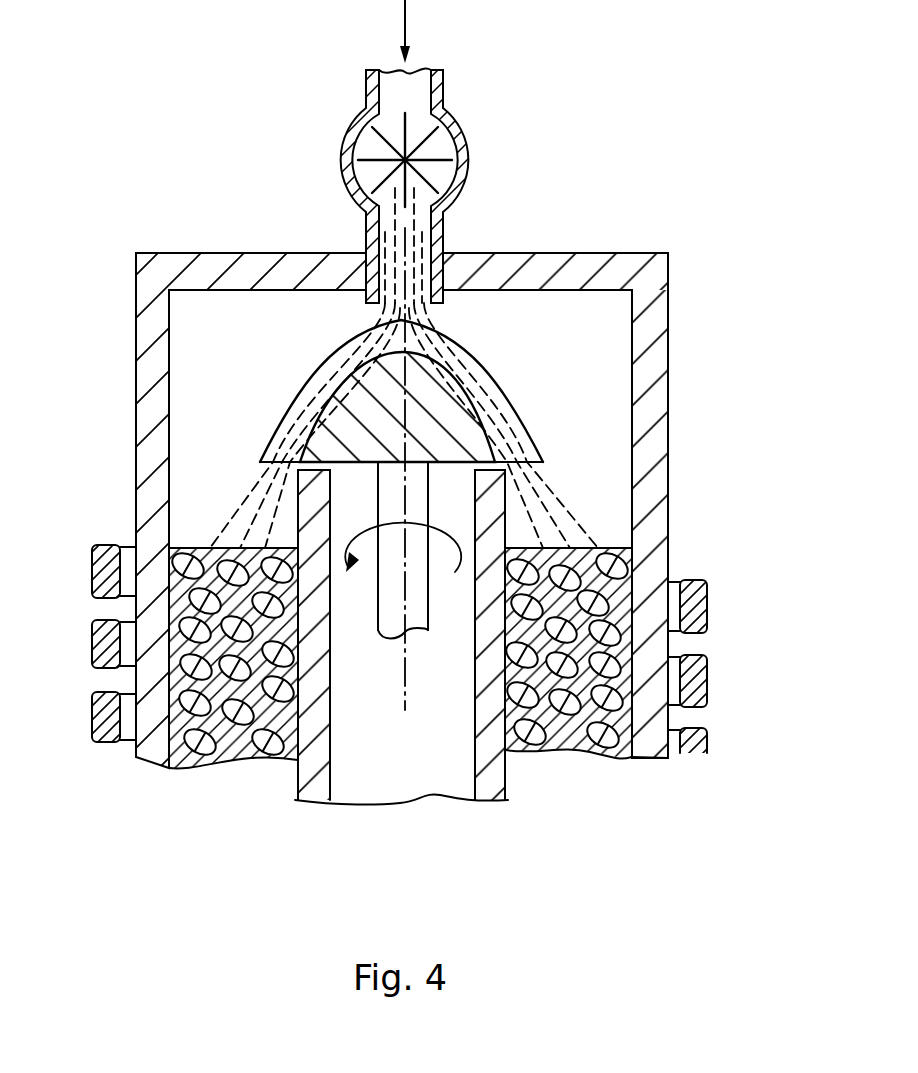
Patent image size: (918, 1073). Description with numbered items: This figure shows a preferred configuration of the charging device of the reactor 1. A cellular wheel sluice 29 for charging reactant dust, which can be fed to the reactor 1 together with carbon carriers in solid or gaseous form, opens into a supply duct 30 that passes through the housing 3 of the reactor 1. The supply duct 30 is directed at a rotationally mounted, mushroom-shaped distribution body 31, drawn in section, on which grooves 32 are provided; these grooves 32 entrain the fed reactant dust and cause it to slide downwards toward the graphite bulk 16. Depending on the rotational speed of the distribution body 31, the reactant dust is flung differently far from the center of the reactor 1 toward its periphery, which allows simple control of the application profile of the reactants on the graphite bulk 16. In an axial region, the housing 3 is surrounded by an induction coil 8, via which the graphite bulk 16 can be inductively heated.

The reactor 1 is at (413, 429).
The housing 3 is at (645, 459).
The induction coil 8 is at (703, 683).
The graphite bulk 16 is at (563, 732).
The cellular wheel sluice 29 is at (440, 150).
The supply duct 30 is at (437, 243).
The distribution body 31 is at (438, 437).
The grooves 32 is at (485, 370).